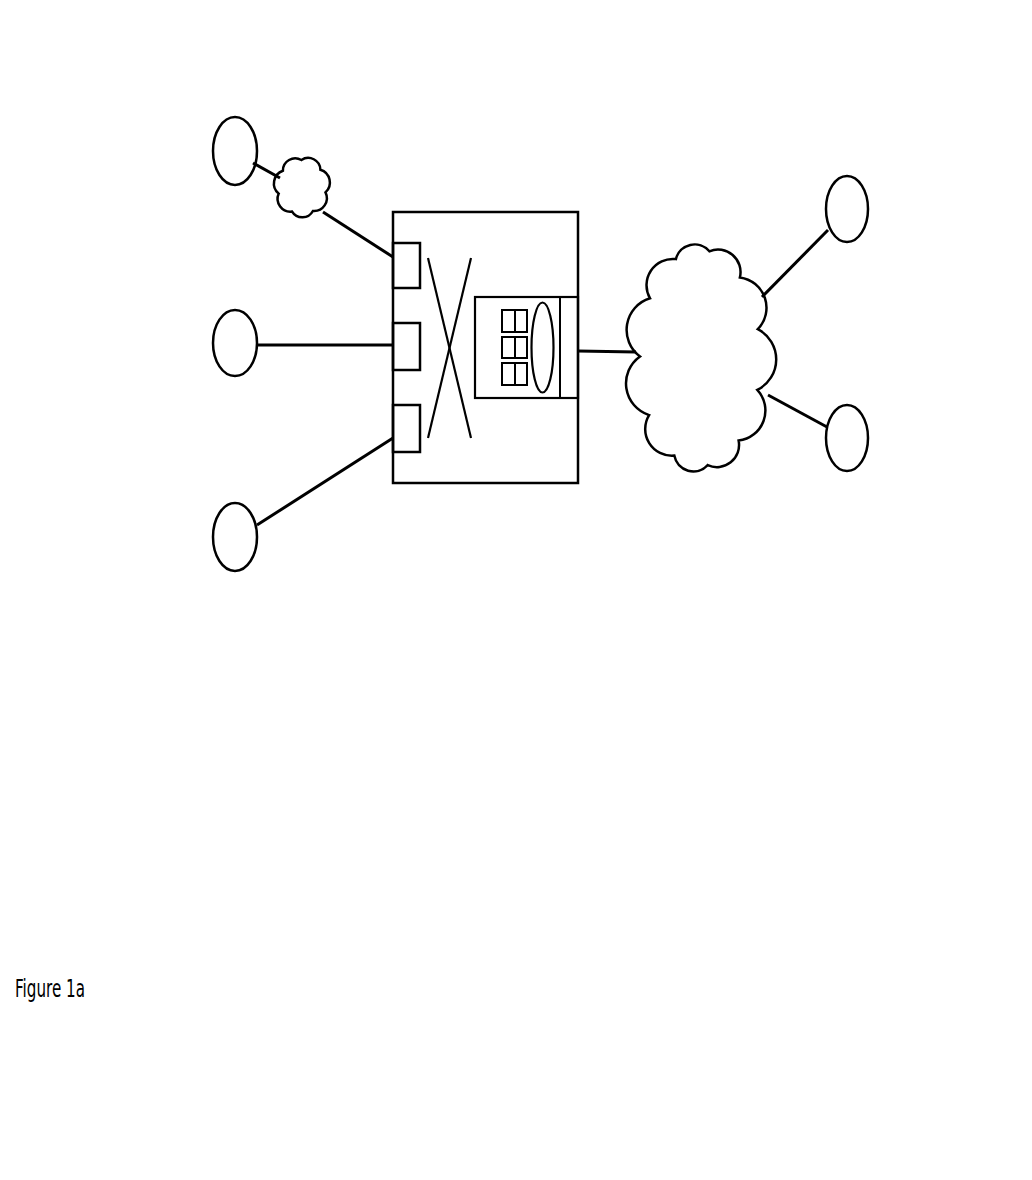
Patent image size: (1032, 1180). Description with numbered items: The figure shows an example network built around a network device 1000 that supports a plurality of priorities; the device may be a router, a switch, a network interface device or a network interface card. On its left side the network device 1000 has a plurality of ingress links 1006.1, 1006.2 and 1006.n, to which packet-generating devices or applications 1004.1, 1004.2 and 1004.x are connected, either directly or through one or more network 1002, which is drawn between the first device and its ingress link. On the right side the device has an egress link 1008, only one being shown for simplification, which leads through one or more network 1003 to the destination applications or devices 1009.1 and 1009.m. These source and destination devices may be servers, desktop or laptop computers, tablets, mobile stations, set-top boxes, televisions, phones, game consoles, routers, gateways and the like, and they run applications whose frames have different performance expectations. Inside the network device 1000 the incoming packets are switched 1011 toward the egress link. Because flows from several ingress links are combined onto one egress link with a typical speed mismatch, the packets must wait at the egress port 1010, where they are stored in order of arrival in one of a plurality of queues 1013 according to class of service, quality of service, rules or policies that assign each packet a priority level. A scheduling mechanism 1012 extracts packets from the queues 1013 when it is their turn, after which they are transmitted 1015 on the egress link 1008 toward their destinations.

The network device 1000 is at (485, 418).
The network 1002 is at (301, 143).
The network 1003 is at (701, 293).
The device or application 1004.1 is at (246, 102).
The device or application 1004.2 is at (208, 304).
The device or application 1004.x is at (200, 520).
The ingress link 1006.1 is at (361, 198).
The ingress link 1006.2 is at (325, 305).
The ingress link 1006.n is at (325, 525).
The egress link 1008 is at (607, 293).
The destination application or device 1009.1 is at (849, 192).
The destination application or device 1009.m is at (846, 401).
The egress port 1010 is at (526, 476).
The switching 1011 is at (461, 243).
The scheduling mechanism 1012 is at (554, 474).
The queues 1013 is at (526, 246).
The transmission 1015 is at (600, 419).